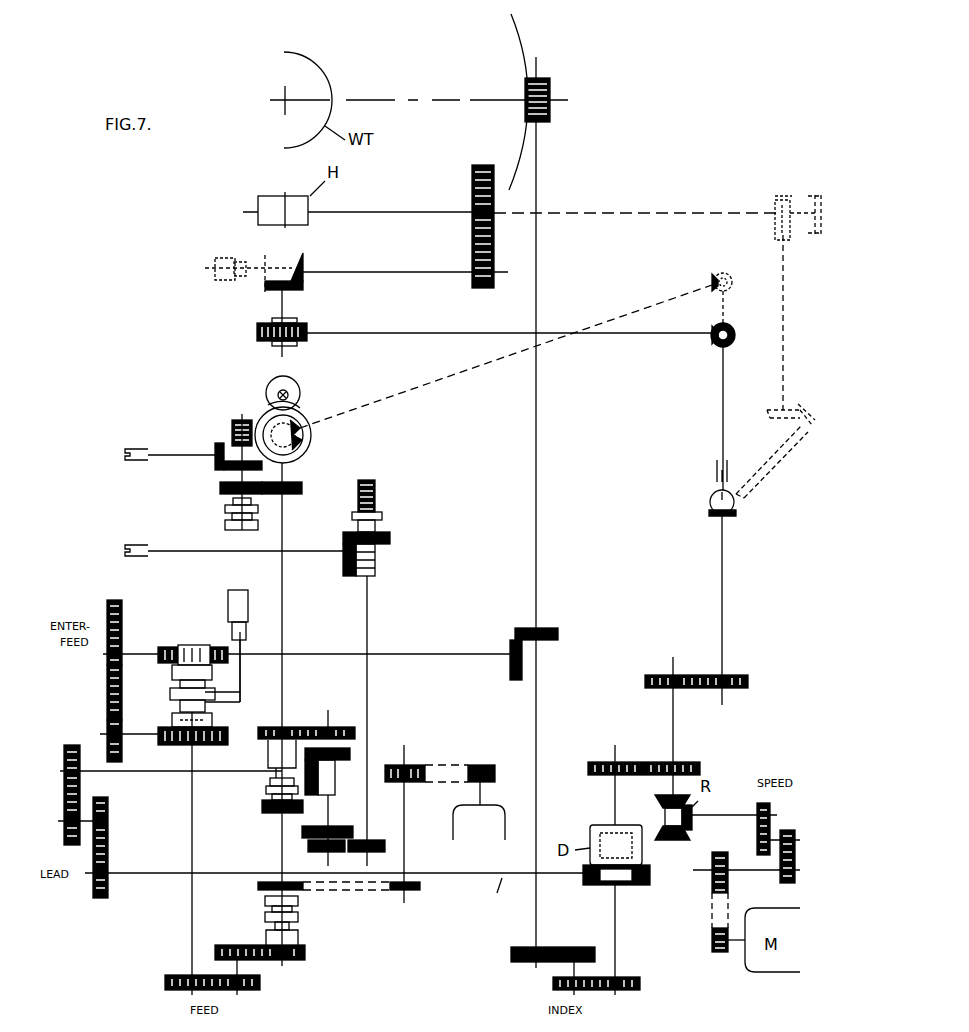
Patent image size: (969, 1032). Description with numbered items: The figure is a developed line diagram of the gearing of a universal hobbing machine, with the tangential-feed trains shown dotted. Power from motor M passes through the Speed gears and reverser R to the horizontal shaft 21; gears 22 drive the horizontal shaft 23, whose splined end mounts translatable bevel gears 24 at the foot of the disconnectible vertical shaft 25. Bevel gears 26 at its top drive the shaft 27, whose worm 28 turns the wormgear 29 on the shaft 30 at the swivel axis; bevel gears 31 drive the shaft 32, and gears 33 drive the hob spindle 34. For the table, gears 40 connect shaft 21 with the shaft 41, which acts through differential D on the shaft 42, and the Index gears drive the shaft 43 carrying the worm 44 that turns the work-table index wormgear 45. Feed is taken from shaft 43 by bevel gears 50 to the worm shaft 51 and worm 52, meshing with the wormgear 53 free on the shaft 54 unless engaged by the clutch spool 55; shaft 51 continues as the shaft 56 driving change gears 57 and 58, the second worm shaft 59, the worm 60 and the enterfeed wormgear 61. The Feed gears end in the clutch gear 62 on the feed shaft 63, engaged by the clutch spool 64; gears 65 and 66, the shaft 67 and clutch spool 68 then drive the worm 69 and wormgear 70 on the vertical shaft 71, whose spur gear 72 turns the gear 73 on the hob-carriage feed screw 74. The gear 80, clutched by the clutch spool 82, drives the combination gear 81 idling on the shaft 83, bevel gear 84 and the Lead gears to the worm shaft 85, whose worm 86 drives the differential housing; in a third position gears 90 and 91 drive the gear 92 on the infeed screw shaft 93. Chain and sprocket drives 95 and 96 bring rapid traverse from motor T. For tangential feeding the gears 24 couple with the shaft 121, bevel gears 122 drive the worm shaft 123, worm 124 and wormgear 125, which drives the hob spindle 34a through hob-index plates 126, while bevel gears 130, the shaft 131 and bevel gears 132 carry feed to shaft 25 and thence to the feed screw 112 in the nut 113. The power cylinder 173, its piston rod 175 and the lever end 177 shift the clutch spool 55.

The horizontal shaft 21 is at (675, 750).
The gears 22 is at (696, 675).
The horizontal shaft 23 is at (725, 660).
The bevel gears 24 is at (740, 505).
The vertical shaft 25 is at (720, 408).
The bevel gears 26 is at (710, 340).
The shaft 27 is at (481, 333).
The worm 28 is at (300, 342).
The wormgear 29 is at (305, 325).
The shaft 30 is at (290, 308).
The bevel gears 31 is at (270, 287).
The shaft 32 is at (354, 276).
The gears 33 is at (470, 266).
The hob spindle 34 is at (405, 207).
The hob spindle 34a is at (428, 214).
The gears 40 is at (640, 762).
The shaft 41 is at (612, 797).
The shaft 42 is at (615, 900).
The shaft 43 is at (540, 694).
The worm 44 is at (552, 88).
The work-table index wormgear 45 is at (518, 44).
The bevel gears 50 is at (512, 632).
The worm shaft 51 is at (432, 658).
The worm 52 is at (205, 645).
The wormgear 53 is at (172, 645).
The shaft 54 is at (190, 797).
The clutch spool 55 is at (170, 695).
The shaft 56 is at (107, 660).
The change gear 57 is at (107, 690).
The change gear 58 is at (107, 728).
The worm shaft 59 is at (135, 735).
The worm 60 is at (200, 746).
The wormgear 61 is at (215, 731).
The clutch gear 62 is at (305, 950).
The feed shaft 63 is at (282, 834).
The clutch spool 64 is at (265, 900).
The gear 65 is at (292, 494).
The gear 66 is at (218, 488).
The shaft 67 is at (240, 472).
The clutch spool 68 is at (225, 512).
The worm 69 is at (230, 428).
The wormgear 70 is at (262, 418).
The vertical shaft 71 is at (295, 452).
The spur gear 72 is at (268, 410).
The gear 73 is at (275, 378).
The hob-carriage feed screw 74 is at (288, 393).
The gear 80 is at (285, 727).
The combination gear 81 is at (348, 748).
The clutch spool 82 is at (262, 806).
The shaft 83 is at (330, 775).
The bevel gear 84 is at (316, 793).
The worm shaft 85 is at (485, 890).
The worm 86 is at (598, 885).
The gear 90 is at (332, 826).
The gear 91 is at (318, 852).
The gear 92 is at (370, 853).
The infeed screw shaft 93 is at (380, 568).
The chain and sprocket drive 95 is at (378, 892).
The chain and sprocket drive 96 is at (427, 788).
The feed screw 112 is at (240, 260).
The nut 113 is at (222, 280).
The shaft 121 is at (768, 458).
The bevel gears 122 is at (785, 420).
The worm shaft 123 is at (783, 322).
The worm 124 is at (775, 225).
The wormgear 125 is at (775, 196).
The hob-index plates 126 is at (814, 242).
The bevel gears 130 is at (303, 435).
The shaft 131 is at (506, 356).
The bevel gears 132 is at (705, 278).
The power cylinder 173 is at (228, 598).
The piston rod 175 is at (240, 654).
The bell-crank lever end 177 is at (243, 702).